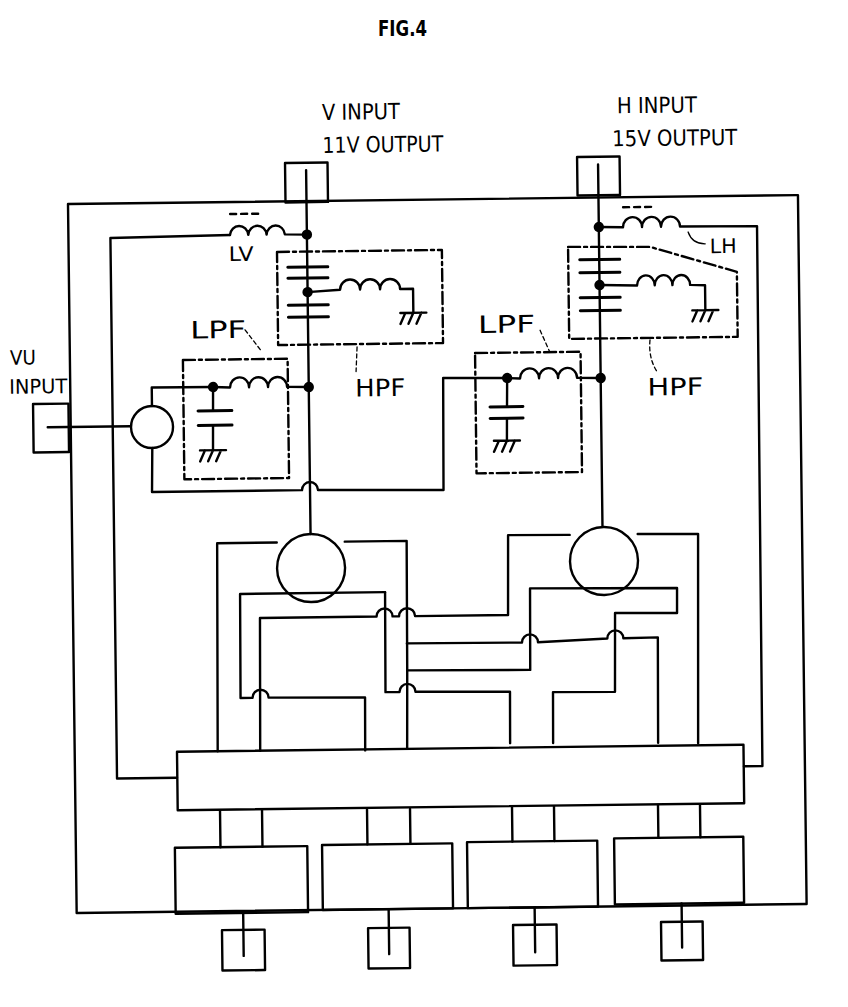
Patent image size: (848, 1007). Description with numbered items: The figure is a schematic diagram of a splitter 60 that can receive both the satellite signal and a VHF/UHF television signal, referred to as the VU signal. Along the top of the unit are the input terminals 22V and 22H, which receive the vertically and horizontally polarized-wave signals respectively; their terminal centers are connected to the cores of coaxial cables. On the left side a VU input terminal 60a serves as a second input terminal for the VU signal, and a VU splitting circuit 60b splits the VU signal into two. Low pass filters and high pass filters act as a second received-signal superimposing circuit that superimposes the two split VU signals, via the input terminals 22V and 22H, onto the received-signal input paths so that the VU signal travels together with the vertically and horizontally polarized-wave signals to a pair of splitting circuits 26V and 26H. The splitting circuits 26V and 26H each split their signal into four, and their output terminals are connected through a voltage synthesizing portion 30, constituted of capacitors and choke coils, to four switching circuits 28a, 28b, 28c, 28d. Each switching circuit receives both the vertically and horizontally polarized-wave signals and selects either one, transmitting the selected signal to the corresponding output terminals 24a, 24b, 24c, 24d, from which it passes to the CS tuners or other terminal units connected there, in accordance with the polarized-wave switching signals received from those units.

The splitter 60 is at (773, 200).
The VU input terminal 60a is at (42, 445).
The VU splitting circuit 60b is at (150, 406).
The input terminal 22V is at (284, 180).
The input terminal 22H is at (577, 181).
The splitting circuit 26V is at (296, 540).
The splitting circuit 26H is at (581, 536).
The voltage synthesizing portion 30 is at (594, 748).
The switching circuit 28a is at (189, 850).
The switching circuit 28b is at (330, 848).
The switching circuit 28c is at (479, 847).
The switching circuit 28d is at (632, 845).
The output terminal 24a is at (213, 954).
The output terminal 24b is at (359, 954).
The output terminal 24c is at (504, 953).
The output terminal 24d is at (652, 952).